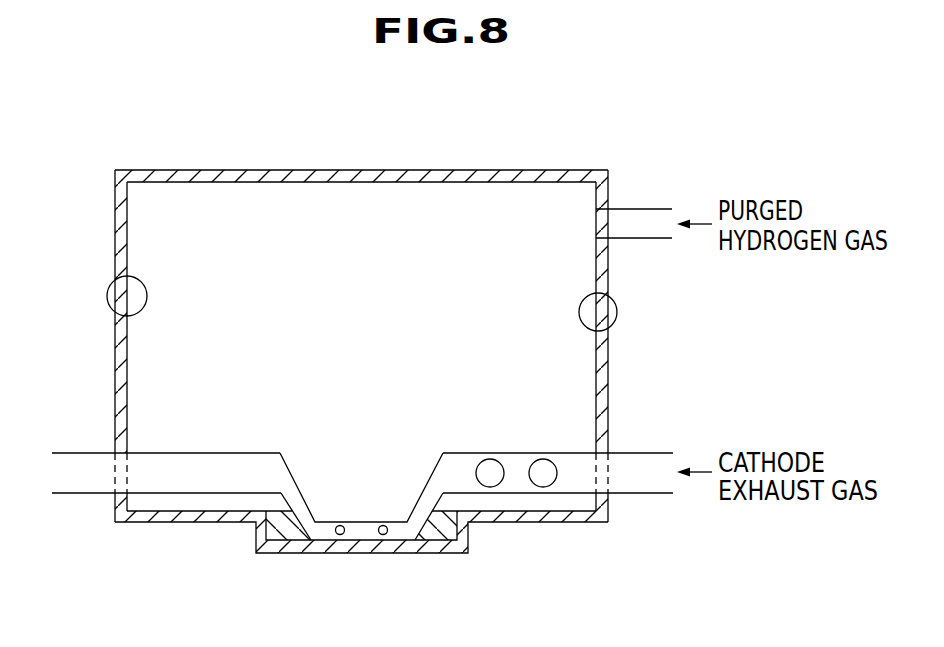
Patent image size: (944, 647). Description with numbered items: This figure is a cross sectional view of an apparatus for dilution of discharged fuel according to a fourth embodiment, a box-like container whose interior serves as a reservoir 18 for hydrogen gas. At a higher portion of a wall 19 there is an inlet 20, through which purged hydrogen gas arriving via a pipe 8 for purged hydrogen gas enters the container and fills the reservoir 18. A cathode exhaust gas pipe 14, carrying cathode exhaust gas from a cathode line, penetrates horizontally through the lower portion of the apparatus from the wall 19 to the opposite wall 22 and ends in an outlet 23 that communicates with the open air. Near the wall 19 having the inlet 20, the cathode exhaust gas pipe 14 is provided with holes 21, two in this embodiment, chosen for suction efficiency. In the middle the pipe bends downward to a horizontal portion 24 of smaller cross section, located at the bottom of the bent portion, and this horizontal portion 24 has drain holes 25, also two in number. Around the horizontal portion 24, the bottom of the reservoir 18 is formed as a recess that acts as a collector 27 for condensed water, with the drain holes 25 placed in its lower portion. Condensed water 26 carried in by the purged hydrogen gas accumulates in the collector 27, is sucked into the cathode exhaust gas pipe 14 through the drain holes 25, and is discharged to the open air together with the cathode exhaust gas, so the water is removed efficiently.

The pipe for purged hydrogen gas 8 is at (640, 209).
The cathode exhaust gas pipe 14 is at (650, 495).
The reservoir 18 is at (366, 281).
The wall 19 is at (601, 331).
The inlet 20 is at (596, 217).
The holes 21 is at (543, 488).
The wall 22 is at (118, 318).
The outlet 23 is at (51, 494).
The horizontal portion 24 is at (312, 553).
The drain holes 25 is at (383, 535).
The condensed water 26 is at (275, 529).
The collector for condensed water 27 is at (440, 551).